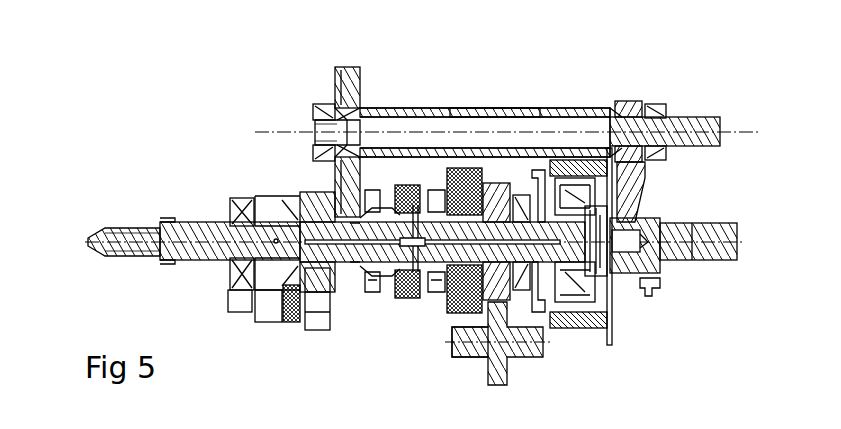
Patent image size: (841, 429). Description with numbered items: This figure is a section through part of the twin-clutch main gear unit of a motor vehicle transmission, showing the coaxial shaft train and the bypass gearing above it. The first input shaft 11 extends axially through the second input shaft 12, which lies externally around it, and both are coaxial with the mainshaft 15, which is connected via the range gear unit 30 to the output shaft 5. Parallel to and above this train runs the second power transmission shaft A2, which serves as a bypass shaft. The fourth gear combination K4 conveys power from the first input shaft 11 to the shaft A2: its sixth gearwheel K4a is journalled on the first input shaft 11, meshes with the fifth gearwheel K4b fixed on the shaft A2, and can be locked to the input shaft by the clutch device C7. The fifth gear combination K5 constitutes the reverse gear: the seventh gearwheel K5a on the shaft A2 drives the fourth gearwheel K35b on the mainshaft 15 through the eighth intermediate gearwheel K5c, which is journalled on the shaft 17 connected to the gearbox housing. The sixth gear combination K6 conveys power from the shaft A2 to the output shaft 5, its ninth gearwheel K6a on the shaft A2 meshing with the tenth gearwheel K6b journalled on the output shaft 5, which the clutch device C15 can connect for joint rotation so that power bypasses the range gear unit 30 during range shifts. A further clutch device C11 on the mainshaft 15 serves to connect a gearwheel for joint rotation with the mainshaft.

The first input shaft 11 is at (131, 227).
The second input shaft 12 is at (180, 223).
The mainshaft 15 is at (442, 233).
The output shaft 5 is at (705, 222).
The shaft 17 is at (462, 352).
The range gear unit 30 is at (600, 338).
The second power transmission shaft A2 is at (402, 108).
The fourth gear combination K4 is at (352, 55).
The sixth gearwheel K4a is at (348, 208).
The fifth gearwheel K4b is at (335, 70).
The fifth gear combination K5 is at (500, 92).
The seventh gearwheel K5a is at (495, 108).
The eighth intermediate gearwheel K5c is at (508, 372).
The fourth gearwheel K35b is at (500, 185).
The sixth gear combination K6 is at (635, 92).
The ninth gearwheel K6a is at (636, 106).
The tenth gearwheel K6b is at (632, 170).
The clutch device C7 is at (376, 300).
The clutch device C11 is at (436, 300).
The clutch device C15 is at (654, 300).